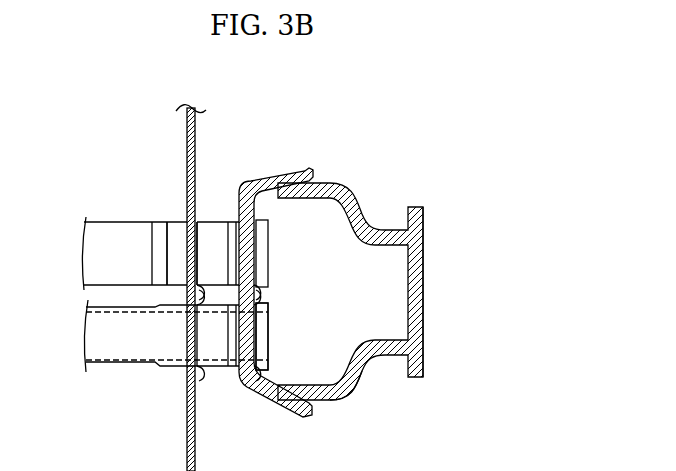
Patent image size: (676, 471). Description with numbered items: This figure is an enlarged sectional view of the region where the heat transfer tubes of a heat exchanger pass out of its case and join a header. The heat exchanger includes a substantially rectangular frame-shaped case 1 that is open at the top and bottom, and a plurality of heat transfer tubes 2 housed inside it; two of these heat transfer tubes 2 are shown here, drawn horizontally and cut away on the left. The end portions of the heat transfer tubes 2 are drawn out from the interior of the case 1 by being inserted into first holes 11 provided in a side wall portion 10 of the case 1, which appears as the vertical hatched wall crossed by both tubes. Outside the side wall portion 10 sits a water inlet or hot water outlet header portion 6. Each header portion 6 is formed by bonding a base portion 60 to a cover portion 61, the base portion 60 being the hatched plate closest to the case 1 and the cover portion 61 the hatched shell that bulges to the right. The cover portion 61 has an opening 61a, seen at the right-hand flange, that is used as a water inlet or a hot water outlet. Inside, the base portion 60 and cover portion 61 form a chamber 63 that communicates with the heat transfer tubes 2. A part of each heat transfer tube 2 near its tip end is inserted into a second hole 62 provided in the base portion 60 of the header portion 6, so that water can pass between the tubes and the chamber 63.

The case 1 is at (197, 131).
The side wall portion 10 is at (196, 163).
The heat transfer tubes 2 is at (108, 325).
The first holes 11 is at (185, 241).
The base portion 60 is at (246, 182).
The header portion 6 is at (362, 189).
The cover portion 61 is at (345, 386).
The opening 61a is at (417, 302).
The second hole 62 is at (247, 341).
The chamber 63 is at (363, 292).